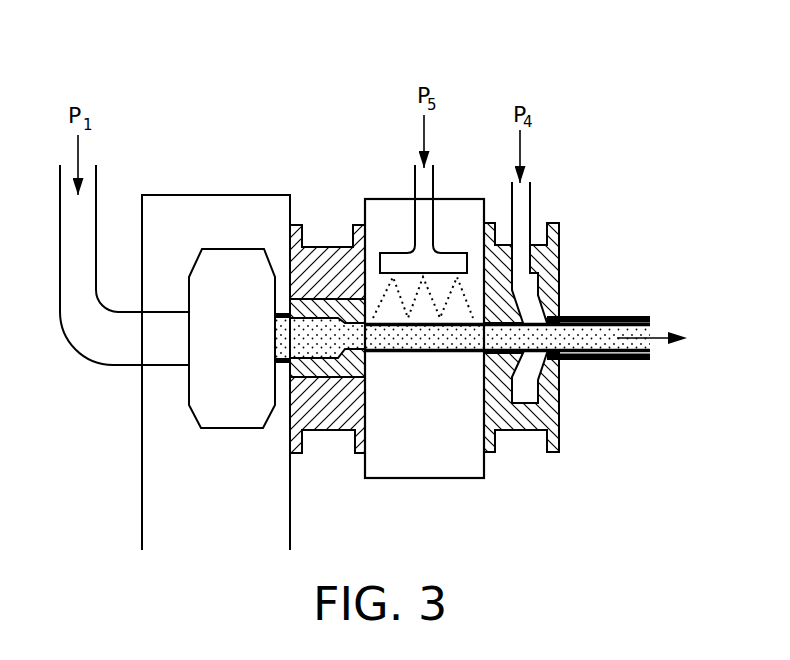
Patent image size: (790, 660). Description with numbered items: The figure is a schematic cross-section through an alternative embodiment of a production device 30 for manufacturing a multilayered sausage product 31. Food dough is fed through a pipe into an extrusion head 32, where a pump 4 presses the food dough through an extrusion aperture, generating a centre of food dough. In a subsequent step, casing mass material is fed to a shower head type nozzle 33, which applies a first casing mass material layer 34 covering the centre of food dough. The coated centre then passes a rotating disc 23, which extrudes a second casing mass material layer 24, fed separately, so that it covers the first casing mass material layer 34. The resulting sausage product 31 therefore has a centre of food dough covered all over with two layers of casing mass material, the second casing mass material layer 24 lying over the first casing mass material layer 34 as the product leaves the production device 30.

The pump 4 is at (240, 347).
The rotating disc 23 is at (562, 360).
The second casing mass material layer 24 is at (602, 316).
The production device 30 is at (597, 167).
The multilayered sausage product 31 is at (658, 308).
The extrusion head 32 is at (303, 208).
The shower head type nozzle 33 is at (455, 263).
The first casing mass material layer 34 is at (430, 353).